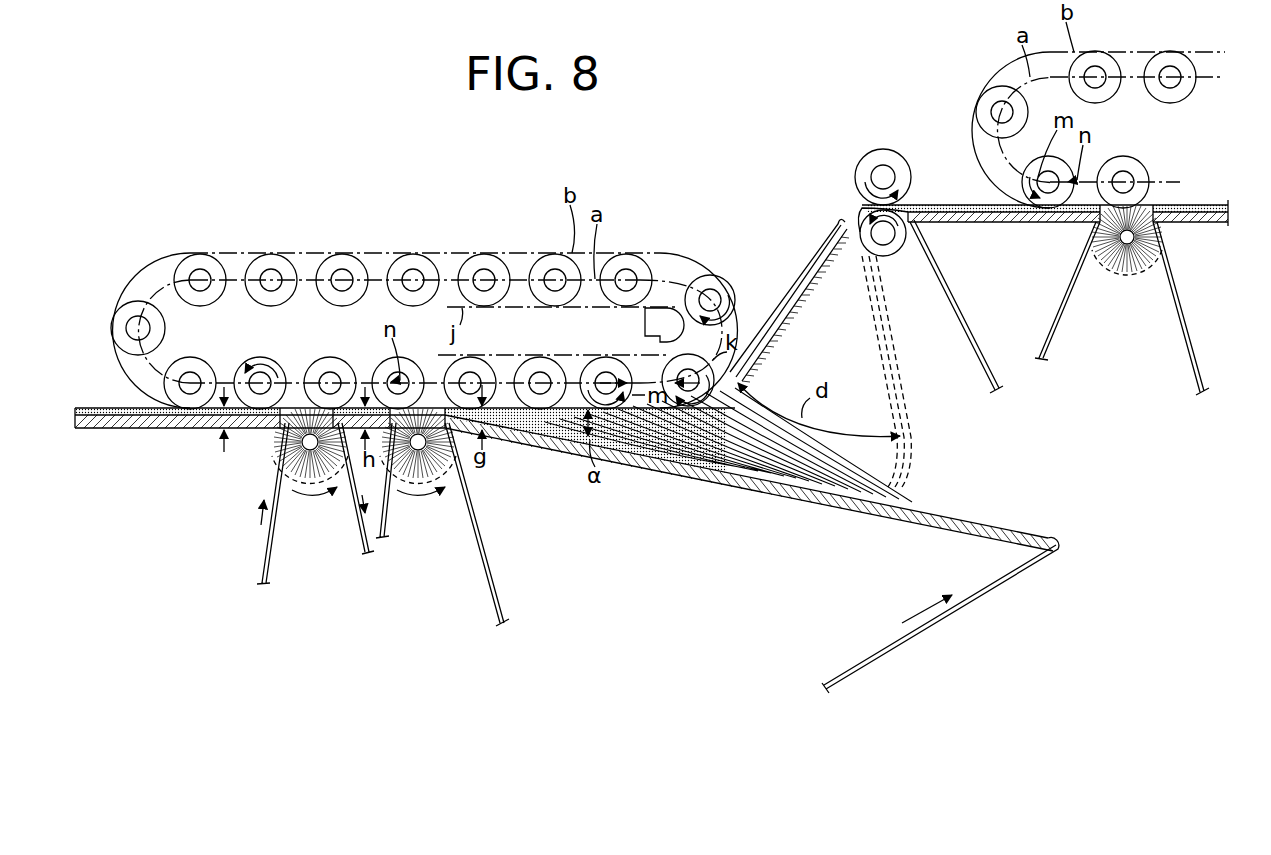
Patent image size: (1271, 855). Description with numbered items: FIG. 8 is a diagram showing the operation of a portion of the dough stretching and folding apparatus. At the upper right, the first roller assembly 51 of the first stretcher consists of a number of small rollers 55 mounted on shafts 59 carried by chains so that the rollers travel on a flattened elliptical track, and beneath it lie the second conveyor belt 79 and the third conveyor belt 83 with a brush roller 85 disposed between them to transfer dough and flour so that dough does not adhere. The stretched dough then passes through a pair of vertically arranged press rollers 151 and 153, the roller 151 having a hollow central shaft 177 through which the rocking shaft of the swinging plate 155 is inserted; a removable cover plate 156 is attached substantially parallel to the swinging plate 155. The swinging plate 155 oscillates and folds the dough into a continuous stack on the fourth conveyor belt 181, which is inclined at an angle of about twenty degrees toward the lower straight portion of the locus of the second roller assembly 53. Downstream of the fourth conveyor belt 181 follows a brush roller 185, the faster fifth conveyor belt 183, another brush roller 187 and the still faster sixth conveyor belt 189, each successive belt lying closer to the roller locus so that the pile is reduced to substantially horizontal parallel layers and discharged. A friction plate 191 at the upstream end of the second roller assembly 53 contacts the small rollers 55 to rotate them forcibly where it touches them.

The roller assembly 53 is at (302, 252).
The small rollers 55 is at (347, 263).
The shafts 59 is at (410, 272).
The friction plate 191 is at (645, 327).
The first roller assembly 51 is at (968, 145).
The press roller 153 is at (870, 162).
The press roller 151 is at (897, 247).
The shaft 177 is at (873, 232).
The cover plate 156 is at (820, 253).
The swinging plate 155 is at (797, 315).
The third conveyor belt 83 is at (972, 358).
The brush roller 85 is at (1122, 273).
The second conveyor belt 79 is at (1187, 362).
The brush roller 187 is at (310, 475).
The brush roller 185 is at (420, 477).
The fifth conveyor belt 183 is at (365, 540).
The sixth conveyor belt 189 is at (267, 567).
The fourth conveyor belt 181 is at (990, 595).